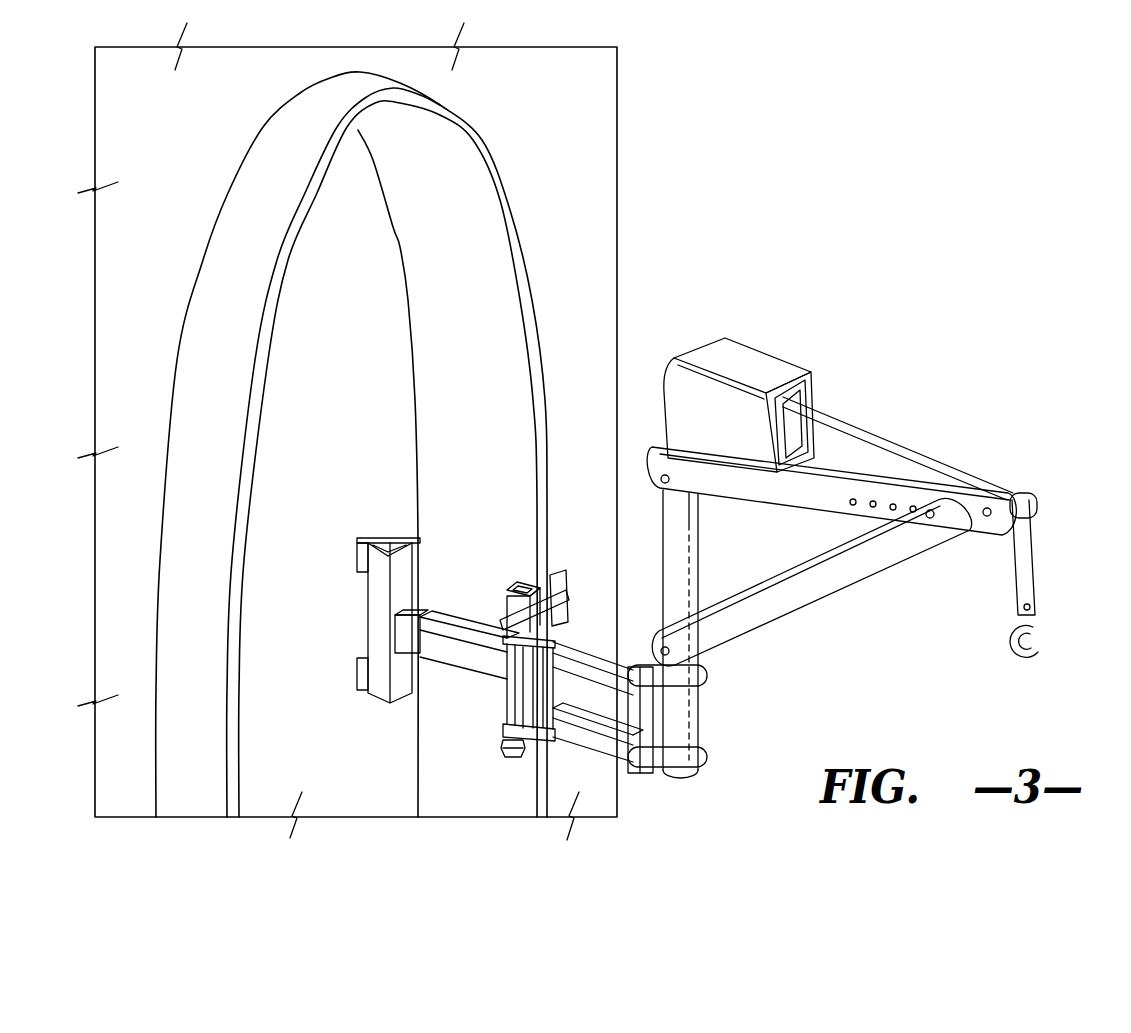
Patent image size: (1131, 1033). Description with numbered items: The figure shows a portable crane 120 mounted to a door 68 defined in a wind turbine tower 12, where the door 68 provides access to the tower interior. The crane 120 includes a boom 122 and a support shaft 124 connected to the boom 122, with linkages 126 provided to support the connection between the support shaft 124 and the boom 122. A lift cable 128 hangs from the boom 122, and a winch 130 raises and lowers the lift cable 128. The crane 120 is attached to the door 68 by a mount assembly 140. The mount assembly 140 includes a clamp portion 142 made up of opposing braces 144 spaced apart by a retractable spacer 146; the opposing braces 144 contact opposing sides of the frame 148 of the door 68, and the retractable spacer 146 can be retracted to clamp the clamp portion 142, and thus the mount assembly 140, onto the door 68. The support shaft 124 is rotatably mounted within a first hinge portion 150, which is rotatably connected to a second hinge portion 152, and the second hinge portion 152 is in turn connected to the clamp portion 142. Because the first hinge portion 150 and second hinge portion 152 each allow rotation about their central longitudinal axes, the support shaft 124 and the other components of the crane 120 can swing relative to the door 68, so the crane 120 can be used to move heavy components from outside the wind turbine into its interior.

The tower 12 is at (560, 238).
The door 68 is at (366, 257).
The frame 148 is at (530, 325).
The portable crane 120 is at (872, 528).
The winch 130 is at (746, 360).
The boom 122 is at (803, 487).
The support shaft 124 is at (680, 530).
The linkage 126 is at (840, 563).
The lift cable 128 is at (1035, 582).
The clamp portion 142 is at (523, 676).
The opposing braces 144 is at (398, 538).
The retractable spacer 146 is at (468, 650).
The mount assembly 140 is at (592, 772).
The first hinge portion 150 is at (650, 790).
The second hinge portion 152 is at (503, 765).